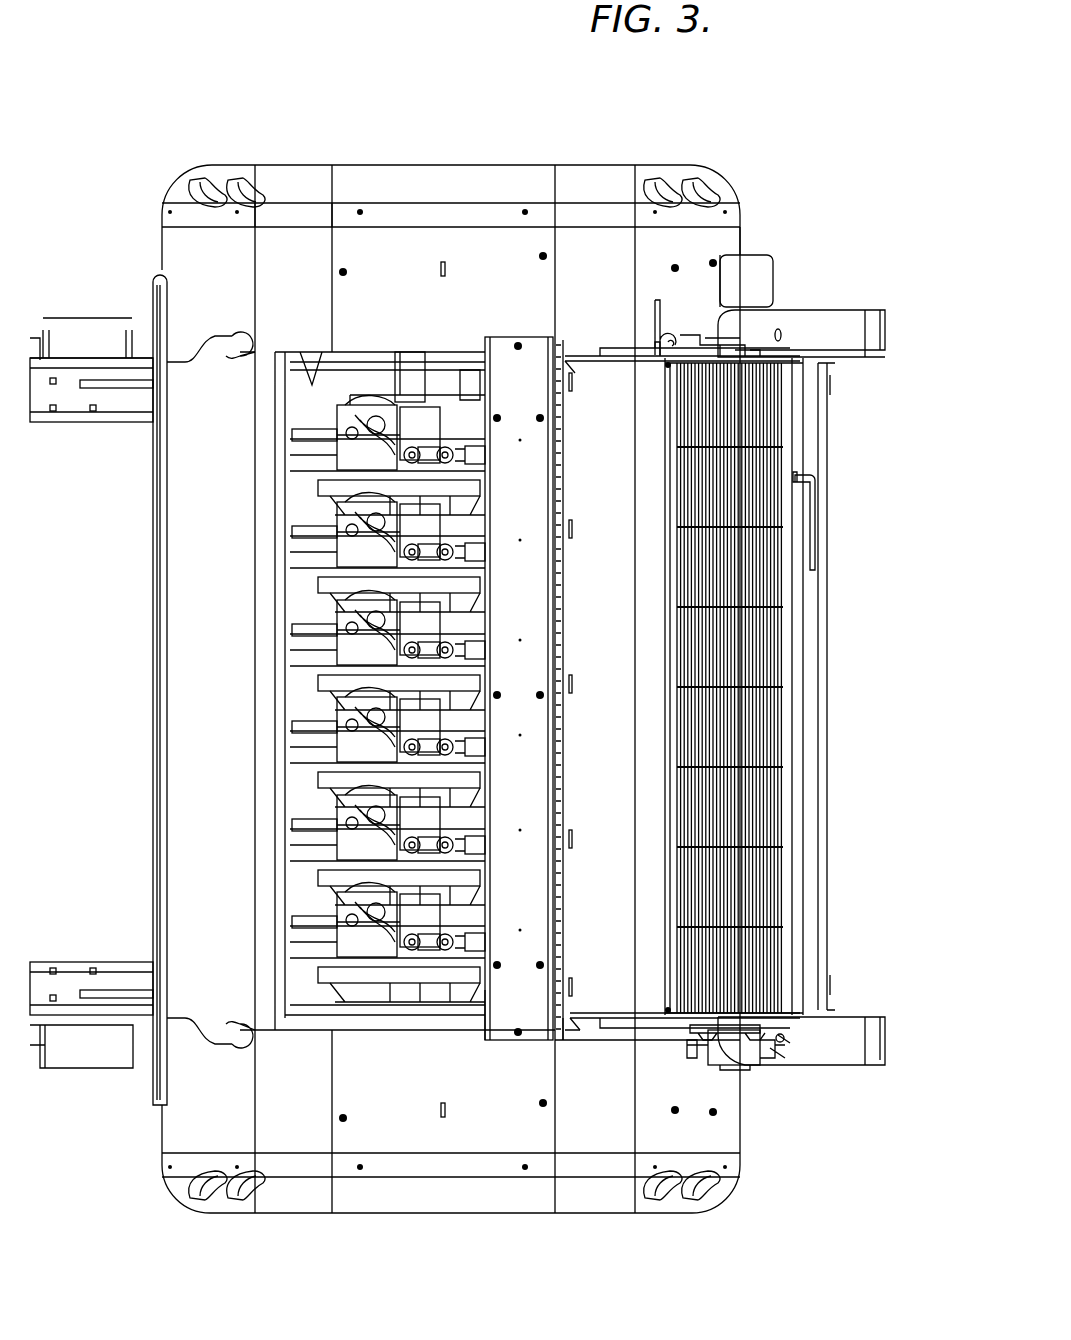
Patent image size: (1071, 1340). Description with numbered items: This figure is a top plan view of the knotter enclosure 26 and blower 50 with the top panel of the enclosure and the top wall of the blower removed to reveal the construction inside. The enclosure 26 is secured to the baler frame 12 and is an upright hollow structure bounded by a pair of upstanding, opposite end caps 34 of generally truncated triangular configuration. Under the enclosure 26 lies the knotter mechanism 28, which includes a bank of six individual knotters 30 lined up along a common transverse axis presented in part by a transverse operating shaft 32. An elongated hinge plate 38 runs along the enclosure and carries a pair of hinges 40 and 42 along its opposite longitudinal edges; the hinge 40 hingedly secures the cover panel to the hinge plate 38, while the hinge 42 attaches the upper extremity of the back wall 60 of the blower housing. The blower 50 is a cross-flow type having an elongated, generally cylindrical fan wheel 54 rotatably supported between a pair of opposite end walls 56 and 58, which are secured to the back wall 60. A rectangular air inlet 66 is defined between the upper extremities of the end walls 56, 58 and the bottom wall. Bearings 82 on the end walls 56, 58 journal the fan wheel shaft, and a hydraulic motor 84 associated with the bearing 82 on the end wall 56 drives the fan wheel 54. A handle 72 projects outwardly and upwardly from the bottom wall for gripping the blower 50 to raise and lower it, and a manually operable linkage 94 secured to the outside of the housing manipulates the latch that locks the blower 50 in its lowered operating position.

The frame 12 is at (95, 975).
The enclosure 26 is at (173, 1224).
The knotter mechanism 28 is at (330, 987).
The knotters 30 is at (340, 452).
The transverse operating shaft 32 is at (435, 395).
The end caps 34 is at (318, 195).
The hinge plate 38 is at (512, 1005).
The hinge 40 is at (493, 912).
The hinge 42 is at (562, 810).
The blower 50 is at (848, 412).
The fan wheel 54 is at (796, 773).
The end wall 56 is at (607, 1020).
The end wall 58 is at (630, 355).
The back wall 60 is at (597, 380).
The air inlet 66 is at (630, 1013).
The handle 72 is at (818, 512).
The bearings 82 is at (698, 1032).
The hydraulic motor 84 is at (736, 1058).
The manually operable linkage 94 is at (688, 355).